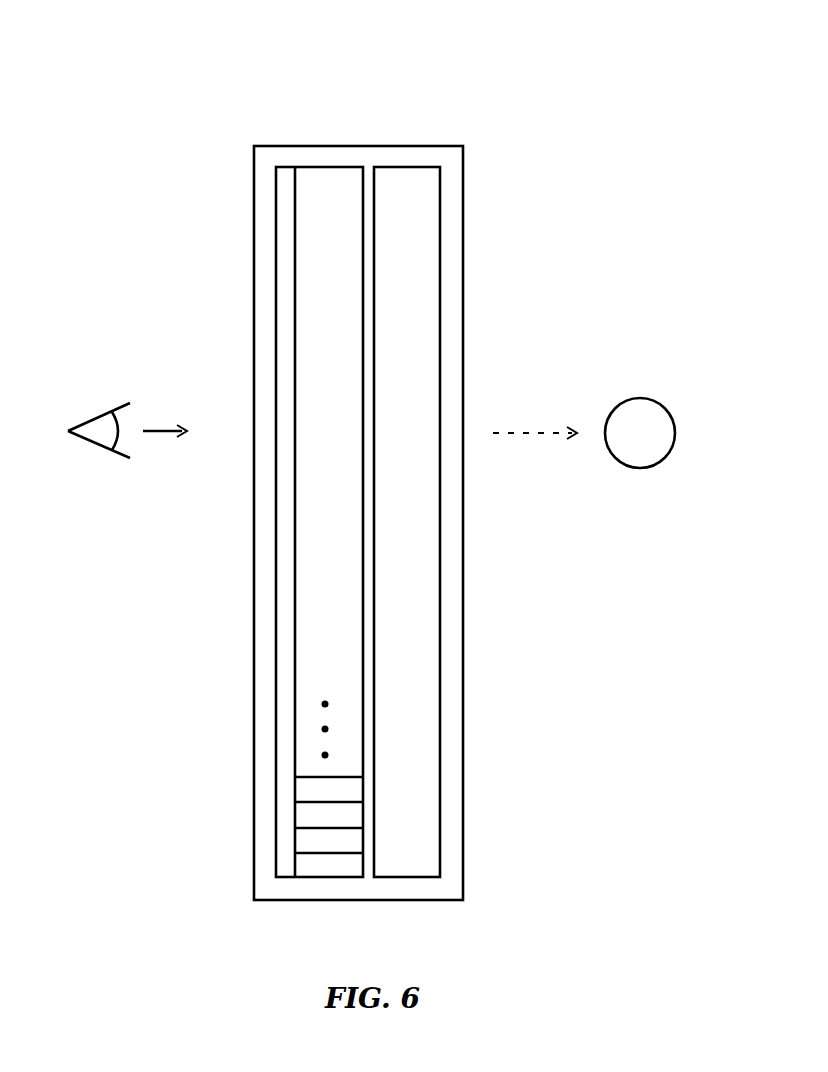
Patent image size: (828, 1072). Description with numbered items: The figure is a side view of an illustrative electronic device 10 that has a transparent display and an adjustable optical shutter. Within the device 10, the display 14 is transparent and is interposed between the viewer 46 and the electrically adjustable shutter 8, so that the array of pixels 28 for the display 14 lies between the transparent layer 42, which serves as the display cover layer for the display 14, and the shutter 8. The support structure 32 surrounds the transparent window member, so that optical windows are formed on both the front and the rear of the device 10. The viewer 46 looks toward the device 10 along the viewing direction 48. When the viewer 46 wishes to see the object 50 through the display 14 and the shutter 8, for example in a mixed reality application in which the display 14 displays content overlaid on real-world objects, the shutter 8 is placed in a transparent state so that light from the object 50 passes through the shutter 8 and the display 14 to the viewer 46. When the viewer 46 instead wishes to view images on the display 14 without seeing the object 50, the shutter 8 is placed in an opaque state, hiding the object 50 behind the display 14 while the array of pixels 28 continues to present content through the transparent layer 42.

The electronic device 10 is at (530, 113).
The electrically adjustable shutter 8 is at (401, 167).
The display 14 is at (286, 534).
The array of pixels 28 is at (343, 840).
The support structure 32 is at (464, 889).
The transparent layer 42 is at (287, 823).
The viewer 46 is at (97, 418).
The viewing direction 48 is at (162, 430).
The object 50 is at (640, 398).